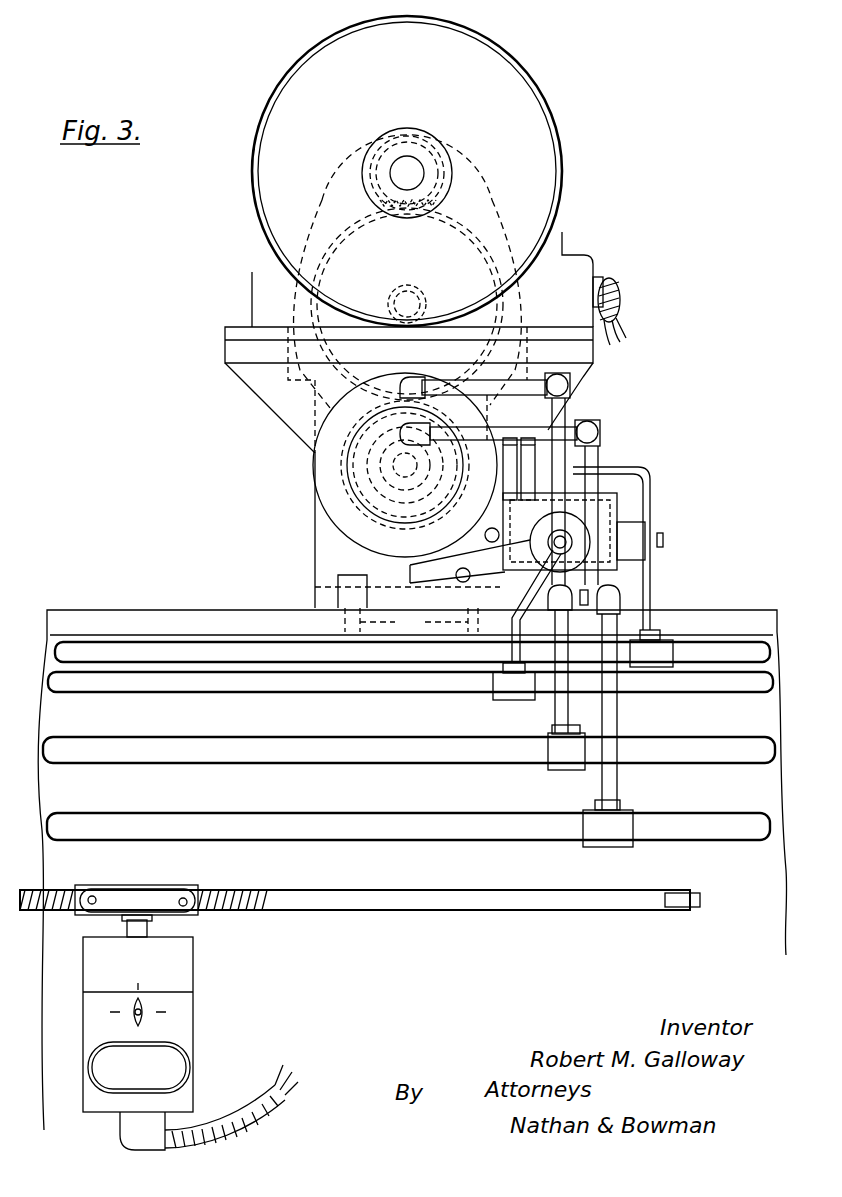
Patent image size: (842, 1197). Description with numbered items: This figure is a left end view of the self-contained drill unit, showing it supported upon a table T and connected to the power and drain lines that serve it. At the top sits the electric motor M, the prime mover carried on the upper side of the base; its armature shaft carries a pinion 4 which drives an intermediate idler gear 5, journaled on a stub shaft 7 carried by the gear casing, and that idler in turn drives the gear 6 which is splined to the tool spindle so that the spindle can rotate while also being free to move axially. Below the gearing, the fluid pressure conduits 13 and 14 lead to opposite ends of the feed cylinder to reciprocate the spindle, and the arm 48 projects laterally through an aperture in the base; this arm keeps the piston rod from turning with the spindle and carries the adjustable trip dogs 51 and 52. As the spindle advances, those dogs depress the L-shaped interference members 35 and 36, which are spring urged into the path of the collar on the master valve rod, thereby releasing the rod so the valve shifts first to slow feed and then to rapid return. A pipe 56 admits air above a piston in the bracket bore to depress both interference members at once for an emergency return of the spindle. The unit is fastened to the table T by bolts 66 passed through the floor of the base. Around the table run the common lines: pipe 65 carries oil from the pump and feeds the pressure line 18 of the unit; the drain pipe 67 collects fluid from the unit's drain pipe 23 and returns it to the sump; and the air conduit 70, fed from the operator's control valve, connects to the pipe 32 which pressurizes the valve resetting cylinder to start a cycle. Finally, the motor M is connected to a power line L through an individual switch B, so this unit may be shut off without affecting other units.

The electric motor M is at (555, 160).
The pinion 4 is at (452, 196).
The intermediate idler gear 5 is at (472, 241).
The gear 6 is at (368, 408).
The stub shaft 7 is at (325, 535).
The arm 48 is at (455, 485).
The fluid pressure conduit 13 is at (450, 392).
The fluid pressure conduit 14 is at (548, 432).
The trip dog 51 is at (510, 438).
The trip dog 52 is at (528, 438).
The interference member 36 is at (538, 480).
The interference member 35 is at (470, 547).
The pipe 56 is at (655, 500).
The drain pipe 23 is at (555, 713).
The fluid pressure line 18 is at (612, 715).
The fluid pressure line 32 is at (510, 650).
The bolts 66 is at (414, 623).
The table T is at (738, 606).
The conduit 70 is at (410, 684).
The drain pipe 67 is at (409, 750).
The pipe 65 is at (408, 827).
The power line L is at (362, 914).
The switch B is at (170, 1006).